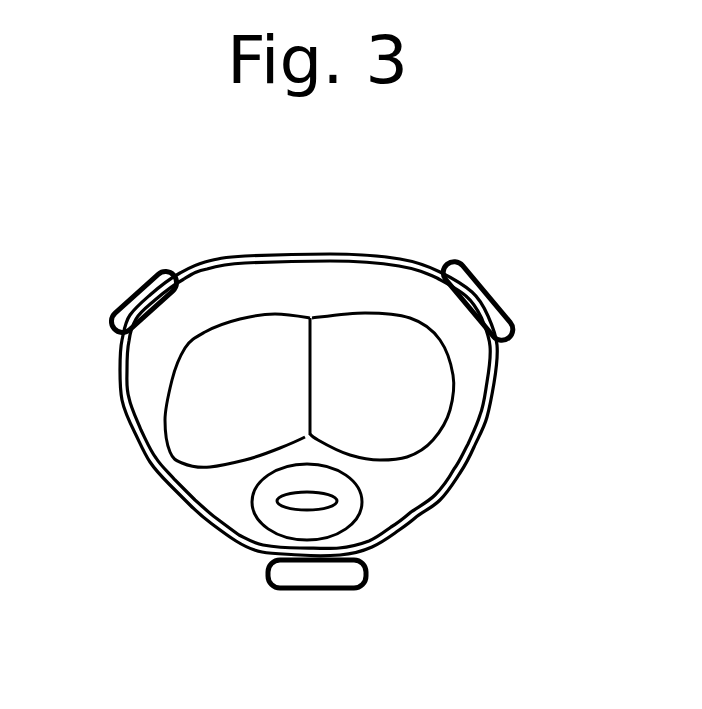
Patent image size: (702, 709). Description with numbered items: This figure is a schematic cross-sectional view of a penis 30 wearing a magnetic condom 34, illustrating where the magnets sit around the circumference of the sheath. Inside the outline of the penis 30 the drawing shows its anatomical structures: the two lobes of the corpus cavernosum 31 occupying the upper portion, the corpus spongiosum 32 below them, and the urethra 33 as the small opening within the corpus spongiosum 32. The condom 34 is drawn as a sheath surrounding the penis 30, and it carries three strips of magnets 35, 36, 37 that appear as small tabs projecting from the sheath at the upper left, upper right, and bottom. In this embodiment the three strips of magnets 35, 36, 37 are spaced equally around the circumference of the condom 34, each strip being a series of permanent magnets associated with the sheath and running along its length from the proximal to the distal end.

The penis 30 is at (448, 465).
The corpus cavernosum 31 is at (262, 335).
The corpus spongiosum 32 is at (334, 512).
The urethra 33 is at (280, 500).
The condom 34 is at (141, 445).
The strip of magnets 35 is at (487, 288).
The strip of magnets 36 is at (130, 298).
The strip of magnets 37 is at (318, 591).